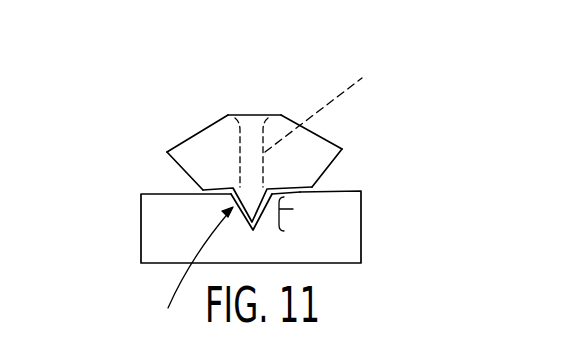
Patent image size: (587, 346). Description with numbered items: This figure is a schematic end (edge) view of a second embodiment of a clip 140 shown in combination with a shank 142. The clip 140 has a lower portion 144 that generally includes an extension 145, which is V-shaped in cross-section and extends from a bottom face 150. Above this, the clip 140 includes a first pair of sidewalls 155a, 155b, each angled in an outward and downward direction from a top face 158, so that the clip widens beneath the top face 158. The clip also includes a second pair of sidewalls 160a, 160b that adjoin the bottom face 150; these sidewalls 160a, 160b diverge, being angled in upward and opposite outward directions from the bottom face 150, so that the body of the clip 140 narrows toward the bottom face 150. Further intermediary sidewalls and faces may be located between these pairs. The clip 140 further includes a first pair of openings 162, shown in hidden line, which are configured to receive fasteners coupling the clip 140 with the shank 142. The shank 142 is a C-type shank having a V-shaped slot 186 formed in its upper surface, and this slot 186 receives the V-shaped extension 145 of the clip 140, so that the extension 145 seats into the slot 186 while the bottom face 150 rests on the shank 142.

The clip 140 is at (108, 153).
The shank 142 is at (363, 248).
The lower portion 144 is at (293, 209).
The extension 145 is at (258, 210).
The bottom face 150 is at (298, 189).
The first sidewall of first pair 155a is at (193, 133).
The second sidewall of first pair 155b is at (333, 140).
The top face 158 is at (253, 115).
The first sidewall of second pair 160a is at (185, 176).
The second sidewall of second pair 160b is at (332, 168).
The openings 162 is at (337, 103).
The slot 186 is at (185, 276).